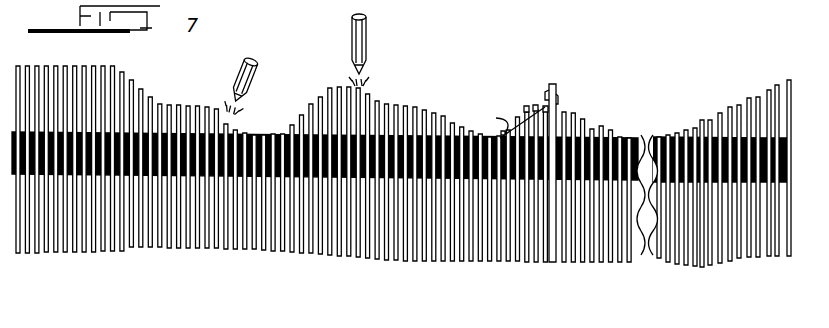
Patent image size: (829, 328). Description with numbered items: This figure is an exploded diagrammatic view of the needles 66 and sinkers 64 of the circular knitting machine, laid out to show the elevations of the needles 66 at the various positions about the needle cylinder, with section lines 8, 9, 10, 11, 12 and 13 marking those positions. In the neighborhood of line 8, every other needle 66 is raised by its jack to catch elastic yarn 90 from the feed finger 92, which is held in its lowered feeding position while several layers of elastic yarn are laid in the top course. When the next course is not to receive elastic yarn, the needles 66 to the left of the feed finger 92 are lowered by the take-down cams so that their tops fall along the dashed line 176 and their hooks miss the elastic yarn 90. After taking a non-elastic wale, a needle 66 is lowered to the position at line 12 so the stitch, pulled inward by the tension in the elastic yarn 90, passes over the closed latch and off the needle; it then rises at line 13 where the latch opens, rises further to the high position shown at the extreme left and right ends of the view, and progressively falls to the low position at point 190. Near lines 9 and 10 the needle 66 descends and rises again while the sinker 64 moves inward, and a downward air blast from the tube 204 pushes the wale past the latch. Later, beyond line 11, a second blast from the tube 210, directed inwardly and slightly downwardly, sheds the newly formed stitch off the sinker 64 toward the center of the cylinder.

The sinkers 64 is at (22, 72).
The needles 66 is at (46, 70).
The elastic yarn 90 is at (496, 118).
The feed finger 92 is at (557, 93).
The dashed line 176 is at (532, 108).
The point 190 is at (660, 134).
The tube 204 is at (367, 35).
The tube 210 is at (246, 59).
The line 8— 8 is at (524, 65).
The line 9— 9 is at (479, 75).
The line 10— 10 is at (312, 57).
The line 11— 11 is at (287, 50).
The line 12— 12 is at (249, 122).
The line 13— 13 is at (186, 68).